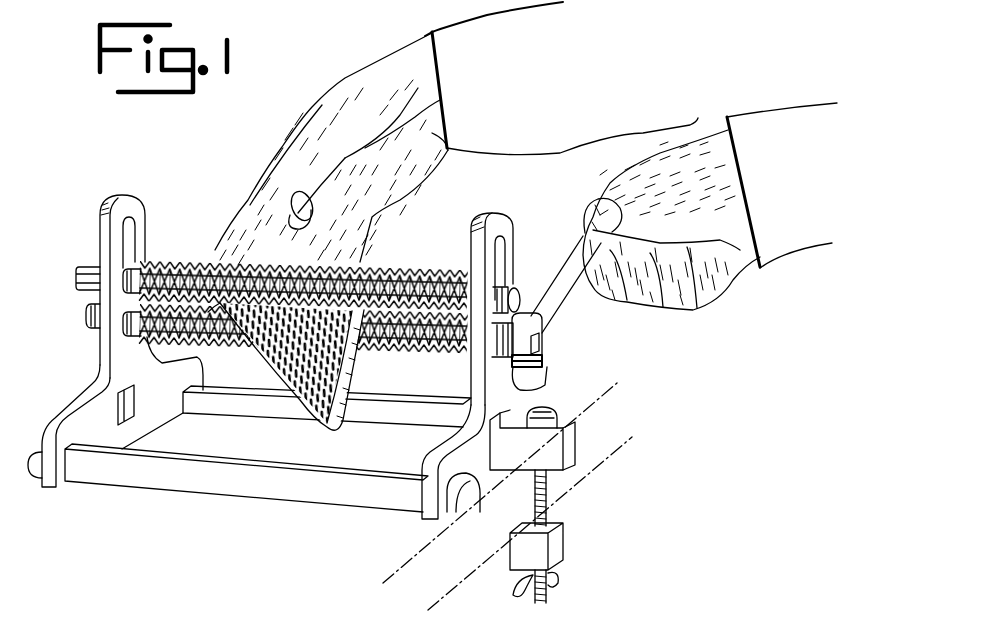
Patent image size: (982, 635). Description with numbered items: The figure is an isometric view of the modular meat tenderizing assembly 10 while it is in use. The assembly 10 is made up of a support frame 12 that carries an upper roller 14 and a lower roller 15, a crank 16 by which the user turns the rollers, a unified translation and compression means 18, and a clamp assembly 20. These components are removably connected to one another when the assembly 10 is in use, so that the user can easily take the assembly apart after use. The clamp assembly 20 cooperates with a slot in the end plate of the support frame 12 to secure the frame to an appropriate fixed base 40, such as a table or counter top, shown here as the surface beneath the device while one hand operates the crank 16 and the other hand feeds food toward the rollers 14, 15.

The modular meat tenderizing assembly 10 is at (95, 192).
The support frame 12 is at (76, 371).
The upper roller 14 is at (78, 278).
The lower roller 15 is at (87, 317).
The crank 16 is at (552, 311).
The unified translation and compression means 18 is at (540, 364).
The clamp assembly 20 is at (584, 441).
The fixed base 40 is at (433, 585).